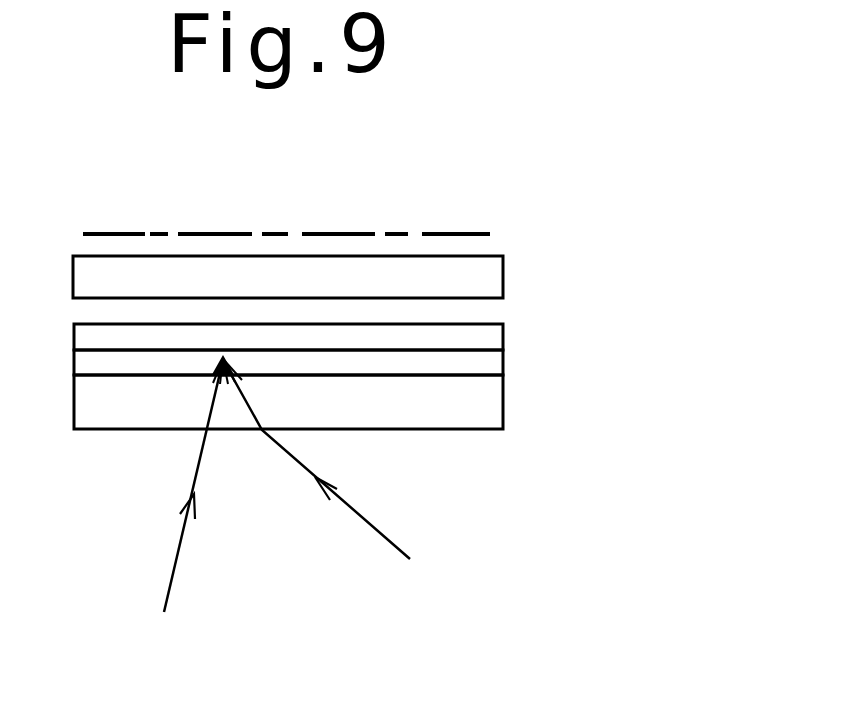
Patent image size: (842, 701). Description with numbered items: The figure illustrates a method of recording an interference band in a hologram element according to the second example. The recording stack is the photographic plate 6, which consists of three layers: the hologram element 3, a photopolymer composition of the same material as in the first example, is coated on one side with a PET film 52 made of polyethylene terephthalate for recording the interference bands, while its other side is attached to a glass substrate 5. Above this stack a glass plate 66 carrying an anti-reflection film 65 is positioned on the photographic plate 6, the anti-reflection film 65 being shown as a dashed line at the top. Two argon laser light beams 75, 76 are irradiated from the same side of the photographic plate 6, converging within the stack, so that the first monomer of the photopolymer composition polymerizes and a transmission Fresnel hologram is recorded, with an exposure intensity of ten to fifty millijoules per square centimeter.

The anti-reflection film 65 is at (463, 233).
The glass plate 66 is at (477, 278).
The photographic plate 6 is at (374, 366).
The PET film 52 is at (480, 340).
The hologram element 3 is at (476, 364).
The glass substrate 5 is at (331, 403).
The argon laser light beam 75 is at (373, 535).
The argon laser light beam 76 is at (178, 563).